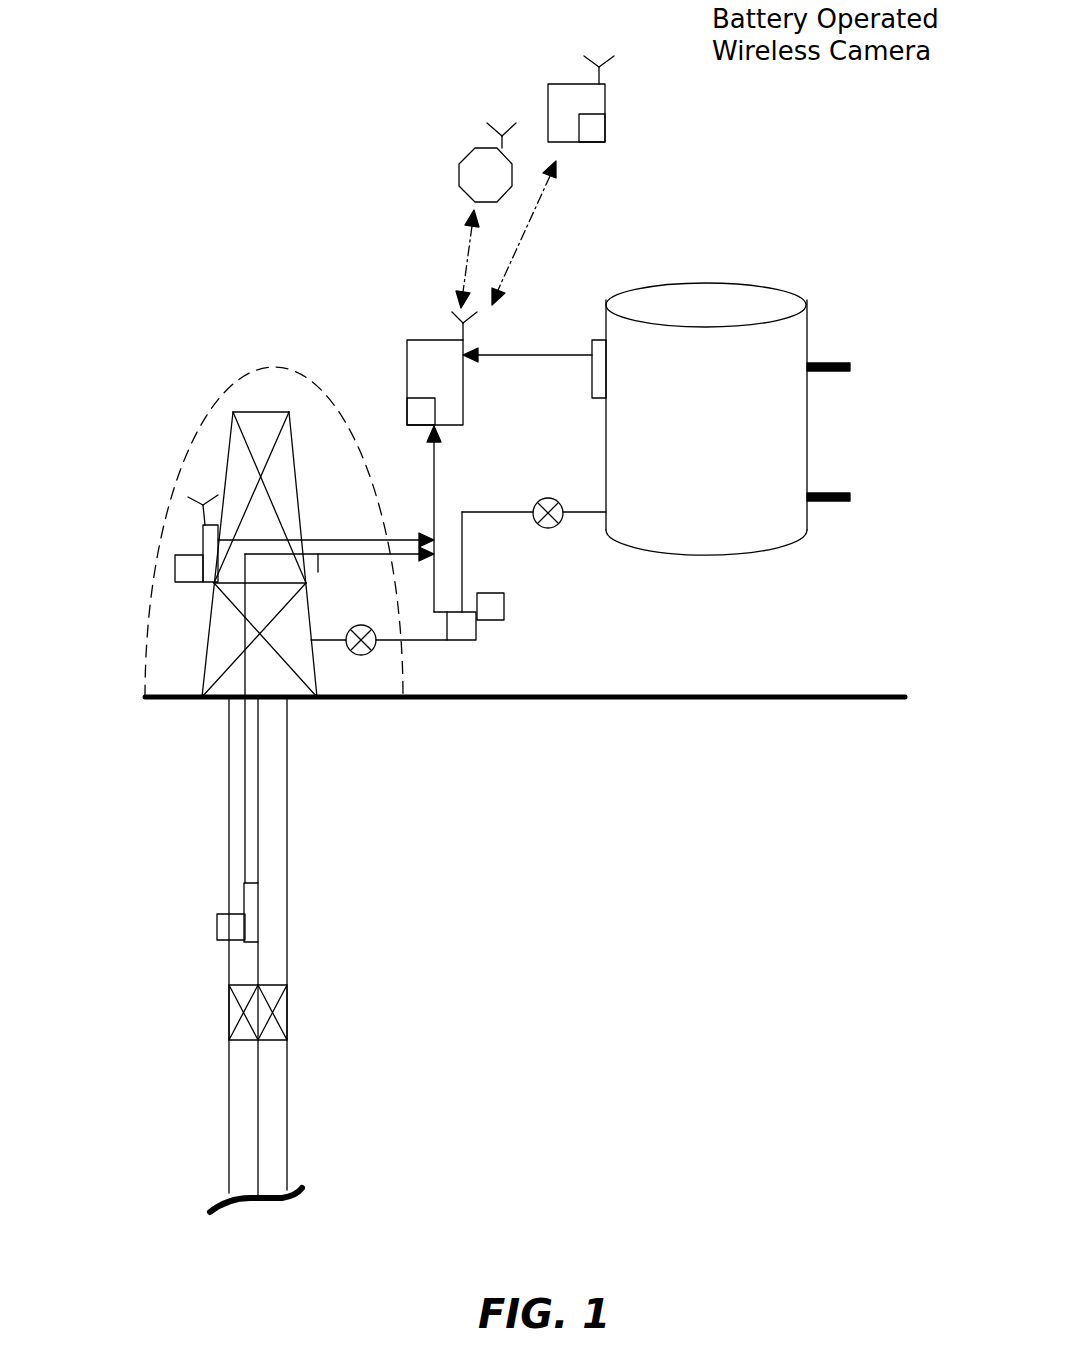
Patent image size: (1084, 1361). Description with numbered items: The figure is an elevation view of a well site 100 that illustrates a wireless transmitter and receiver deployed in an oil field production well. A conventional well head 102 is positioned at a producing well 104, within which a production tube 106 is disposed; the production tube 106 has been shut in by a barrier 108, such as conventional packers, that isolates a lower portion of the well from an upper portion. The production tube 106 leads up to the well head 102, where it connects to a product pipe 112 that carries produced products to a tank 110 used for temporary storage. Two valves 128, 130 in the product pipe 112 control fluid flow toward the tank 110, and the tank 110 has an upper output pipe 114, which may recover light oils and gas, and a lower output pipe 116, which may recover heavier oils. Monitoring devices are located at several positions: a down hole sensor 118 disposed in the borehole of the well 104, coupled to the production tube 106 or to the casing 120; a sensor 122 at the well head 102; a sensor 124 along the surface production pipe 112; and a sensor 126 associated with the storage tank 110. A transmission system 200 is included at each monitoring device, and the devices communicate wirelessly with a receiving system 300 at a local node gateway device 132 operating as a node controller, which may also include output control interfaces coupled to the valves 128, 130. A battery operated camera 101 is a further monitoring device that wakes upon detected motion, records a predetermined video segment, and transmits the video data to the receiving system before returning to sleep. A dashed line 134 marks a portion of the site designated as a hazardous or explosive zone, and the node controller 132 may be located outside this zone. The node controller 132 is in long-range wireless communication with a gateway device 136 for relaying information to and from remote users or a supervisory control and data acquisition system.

The well site 100 is at (616, 241).
The battery operated camera 101 is at (591, 161).
The well head 102 is at (287, 486).
The producing well 104 is at (304, 954).
The production tube 106 is at (301, 877).
The barrier 108 is at (322, 983).
The tank 110 is at (706, 356).
The product pipe 112 is at (465, 706).
The upper output pipe 114 is at (847, 306).
The lower output pipe 116 is at (856, 437).
The down hole sensor 118 is at (199, 899).
The casing 120 is at (201, 954).
The well head sensor 122 is at (268, 543).
The production pipe sensor 124 is at (506, 636).
The storage tank sensor 126 is at (534, 402).
The valve 128 is at (403, 743).
The valve 130 is at (545, 558).
The local node gateway device 132 is at (454, 462).
The dashed line 134 is at (230, 370).
The gateway device 136 is at (436, 215).
The transmission system 200 is at (598, 137).
The receiving system 300 is at (413, 420).